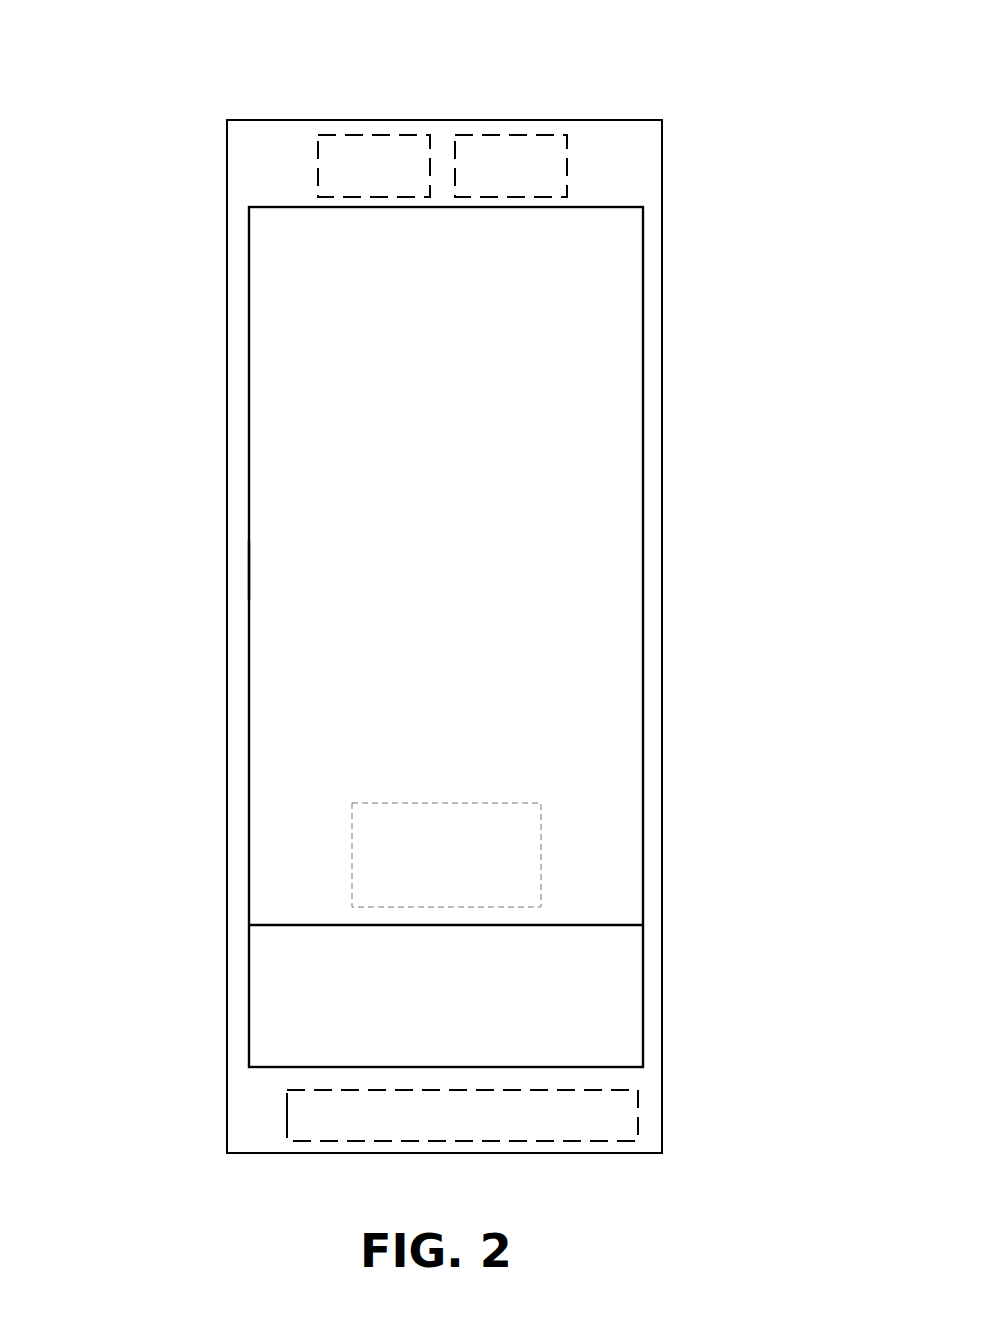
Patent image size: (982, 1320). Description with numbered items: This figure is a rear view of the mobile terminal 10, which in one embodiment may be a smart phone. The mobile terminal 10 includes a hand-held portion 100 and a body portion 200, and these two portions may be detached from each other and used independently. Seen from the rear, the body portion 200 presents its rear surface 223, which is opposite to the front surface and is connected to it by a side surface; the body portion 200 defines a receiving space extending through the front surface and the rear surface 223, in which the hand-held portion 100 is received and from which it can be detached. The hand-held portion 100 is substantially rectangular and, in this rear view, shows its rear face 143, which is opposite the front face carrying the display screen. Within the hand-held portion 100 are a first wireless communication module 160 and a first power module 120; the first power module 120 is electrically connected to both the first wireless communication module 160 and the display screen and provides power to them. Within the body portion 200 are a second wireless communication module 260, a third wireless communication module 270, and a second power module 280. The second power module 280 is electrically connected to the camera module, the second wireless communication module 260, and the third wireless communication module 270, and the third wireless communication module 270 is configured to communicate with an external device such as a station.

The mobile terminal 10 is at (203, 127).
The hand-held portion 100 is at (295, 334).
The first power module 120 is at (590, 1011).
The rear face 143 is at (283, 577).
The first wireless communication module 160 is at (509, 866).
The body portion 200 is at (271, 1126).
The rear surface 223 is at (628, 176).
The second wireless communication module 260 is at (350, 150).
The third wireless communication module 270 is at (518, 150).
The second power module 280 is at (592, 1112).